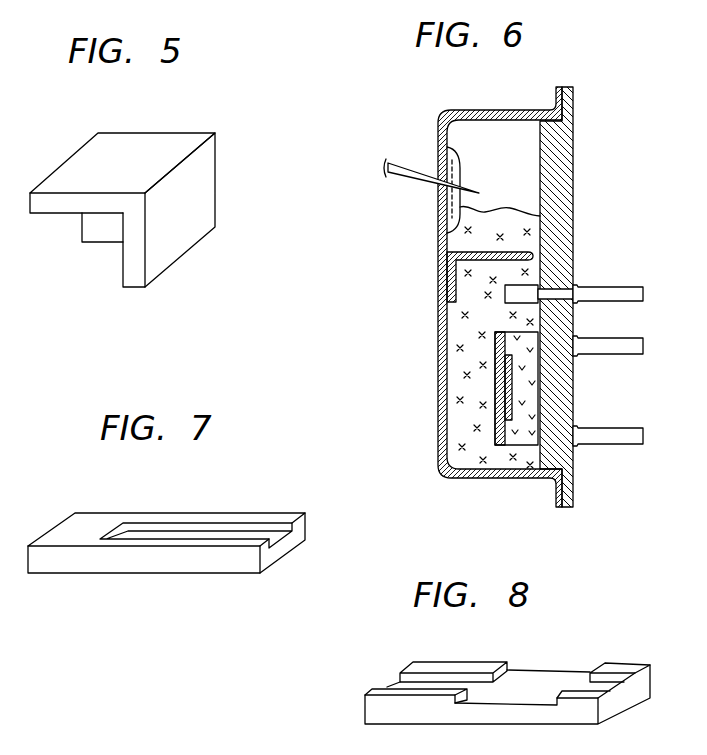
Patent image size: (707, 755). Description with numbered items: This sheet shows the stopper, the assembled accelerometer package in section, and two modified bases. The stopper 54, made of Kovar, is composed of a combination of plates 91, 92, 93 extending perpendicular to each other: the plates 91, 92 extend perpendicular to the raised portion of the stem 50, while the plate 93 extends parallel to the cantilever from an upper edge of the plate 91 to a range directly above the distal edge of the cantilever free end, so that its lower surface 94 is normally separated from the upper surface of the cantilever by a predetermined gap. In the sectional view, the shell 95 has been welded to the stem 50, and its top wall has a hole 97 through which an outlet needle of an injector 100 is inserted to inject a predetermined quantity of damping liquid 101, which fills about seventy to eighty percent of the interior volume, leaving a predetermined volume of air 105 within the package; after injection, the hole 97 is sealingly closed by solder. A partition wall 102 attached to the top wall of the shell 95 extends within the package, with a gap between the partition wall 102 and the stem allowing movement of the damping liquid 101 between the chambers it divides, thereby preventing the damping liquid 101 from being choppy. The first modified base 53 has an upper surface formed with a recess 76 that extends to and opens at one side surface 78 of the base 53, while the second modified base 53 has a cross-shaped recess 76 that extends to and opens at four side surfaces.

In FIG. 6, the stem 50 is at (560, 173).
In FIG. 7, the base 53 is at (194, 516).
In FIG. 8, the base 53 is at (503, 675).
In FIG. 5, the stopper 54 is at (156, 203).
In FIG. 7, the recess 76 is at (268, 535).
In FIG. 8, the recess 76 is at (540, 680).
In FIG. 7, the side surface 78 is at (292, 543).
In FIG. 5, the plate 91 is at (170, 247).
In FIG. 5, the plate 92 is at (103, 232).
In FIG. 5, the plate 93 is at (75, 177).
In FIG. 5, the lower surface 94 is at (62, 217).
In FIG. 6, the shell 95 is at (458, 110).
In FIG. 6, the hole 97 is at (440, 158).
In FIG. 6, the injector 100 is at (402, 167).
In FIG. 6, the damping liquid 101 is at (455, 323).
In FIG. 6, the partition wall 102 is at (470, 252).
In FIG. 6, the air 105 is at (503, 137).